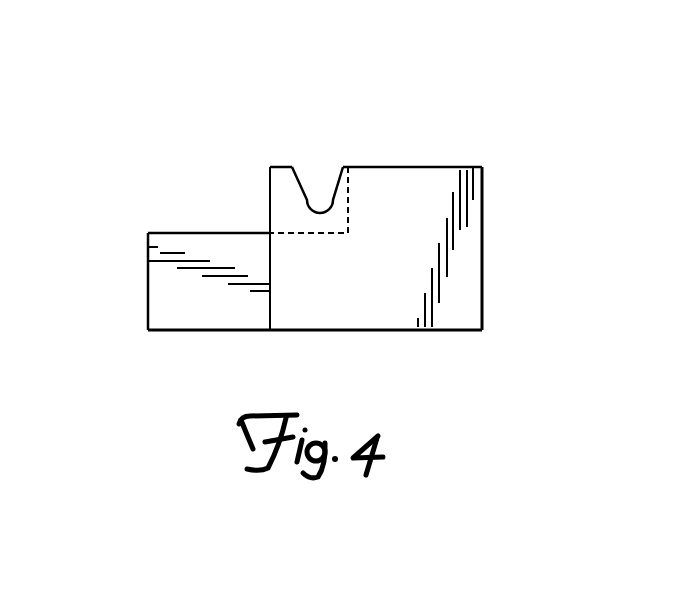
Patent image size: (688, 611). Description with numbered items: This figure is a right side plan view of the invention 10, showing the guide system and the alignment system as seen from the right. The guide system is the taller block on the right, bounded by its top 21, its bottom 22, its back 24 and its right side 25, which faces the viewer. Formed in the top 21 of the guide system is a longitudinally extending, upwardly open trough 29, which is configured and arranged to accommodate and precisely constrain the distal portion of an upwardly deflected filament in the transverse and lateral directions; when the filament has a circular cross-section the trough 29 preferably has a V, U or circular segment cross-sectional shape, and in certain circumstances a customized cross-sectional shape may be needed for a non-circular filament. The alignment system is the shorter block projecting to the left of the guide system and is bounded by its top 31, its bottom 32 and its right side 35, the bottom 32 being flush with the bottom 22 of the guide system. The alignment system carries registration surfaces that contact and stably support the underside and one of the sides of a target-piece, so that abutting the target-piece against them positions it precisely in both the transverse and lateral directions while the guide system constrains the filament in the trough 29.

The support block assembly 10 is at (145, 85).
The top 21 is at (417, 167).
The bottom 22 is at (388, 331).
The back 24 is at (482, 219).
The right side 25 is at (378, 300).
The trough 29 is at (321, 166).
The top 31 is at (198, 233).
The bottom 32 is at (195, 333).
The right side 35 is at (158, 284).